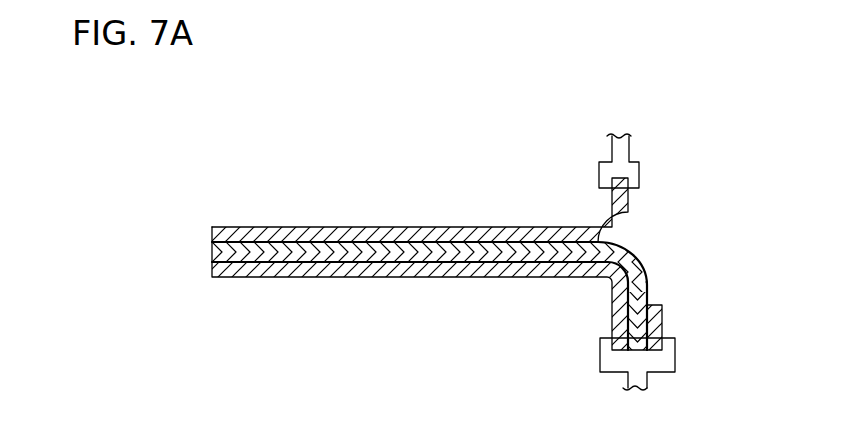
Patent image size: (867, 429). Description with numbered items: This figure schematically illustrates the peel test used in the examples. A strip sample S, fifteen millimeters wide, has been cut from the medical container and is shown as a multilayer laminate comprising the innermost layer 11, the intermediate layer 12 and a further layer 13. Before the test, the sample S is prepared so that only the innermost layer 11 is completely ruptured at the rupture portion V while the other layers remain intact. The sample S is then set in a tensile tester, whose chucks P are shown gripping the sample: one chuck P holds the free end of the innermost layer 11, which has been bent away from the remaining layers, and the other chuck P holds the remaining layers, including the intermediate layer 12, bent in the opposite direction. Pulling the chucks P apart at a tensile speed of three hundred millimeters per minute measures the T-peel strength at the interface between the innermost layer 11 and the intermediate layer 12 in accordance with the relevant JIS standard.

The innermost layer 11 is at (213, 236).
The intermediate layer 12 is at (213, 252).
The third layer 13 is at (213, 270).
The sample S is at (390, 222).
The chucks P is at (632, 171).
The rupture portion V is at (660, 304).